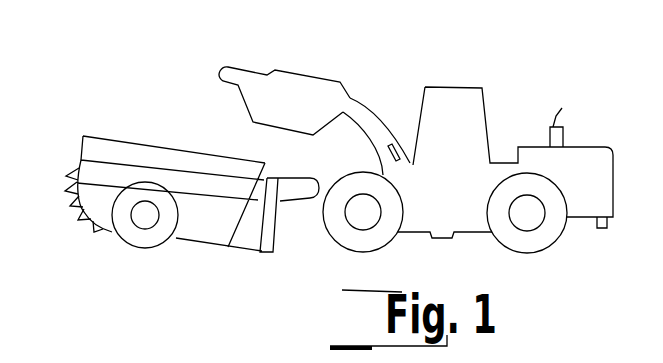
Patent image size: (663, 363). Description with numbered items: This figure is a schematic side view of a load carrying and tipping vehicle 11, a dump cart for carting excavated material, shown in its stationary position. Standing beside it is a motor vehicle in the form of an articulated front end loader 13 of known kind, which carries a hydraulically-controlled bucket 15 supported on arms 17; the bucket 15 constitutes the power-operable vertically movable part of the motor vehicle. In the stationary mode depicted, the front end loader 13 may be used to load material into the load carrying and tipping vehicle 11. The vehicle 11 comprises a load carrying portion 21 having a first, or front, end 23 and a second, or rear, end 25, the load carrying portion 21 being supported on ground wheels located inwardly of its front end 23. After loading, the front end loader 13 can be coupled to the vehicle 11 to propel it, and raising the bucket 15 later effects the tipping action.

The load carrying and tipping vehicle 11 is at (173, 152).
The articulated front end loader 13 is at (416, 138).
The hydraulically-controlled bucket 15 is at (298, 72).
The arms 17 is at (377, 112).
The load carrying portion 21 is at (165, 147).
The first (front) end 23 is at (93, 150).
The second (rear) end 25 is at (268, 165).